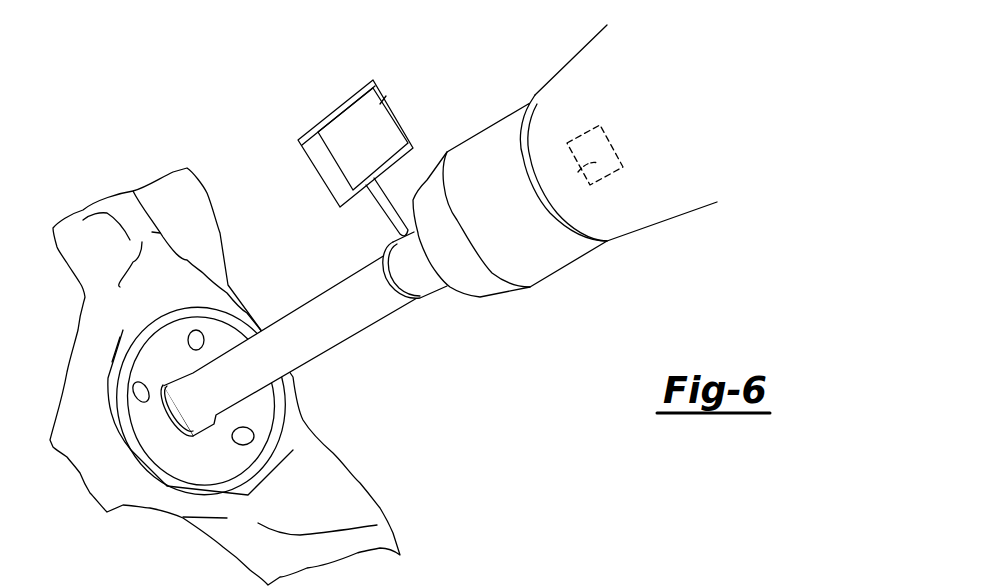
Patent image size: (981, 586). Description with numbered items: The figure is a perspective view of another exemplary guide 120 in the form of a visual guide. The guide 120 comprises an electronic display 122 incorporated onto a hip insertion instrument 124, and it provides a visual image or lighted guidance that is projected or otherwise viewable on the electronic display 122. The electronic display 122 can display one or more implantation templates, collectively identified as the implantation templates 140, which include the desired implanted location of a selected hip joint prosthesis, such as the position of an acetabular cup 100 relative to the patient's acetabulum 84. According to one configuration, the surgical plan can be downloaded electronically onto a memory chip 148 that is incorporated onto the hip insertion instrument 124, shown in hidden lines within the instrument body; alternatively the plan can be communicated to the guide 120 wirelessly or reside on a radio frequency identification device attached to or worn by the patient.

The acetabulum 84 is at (162, 278).
The acetabular cup 100 is at (253, 413).
The guide 120 is at (317, 130).
The electronic display 122 is at (373, 137).
The hip insertion instrument 124 is at (628, 208).
The implantation templates 140 is at (372, 111).
The memory chip 148 is at (580, 172).